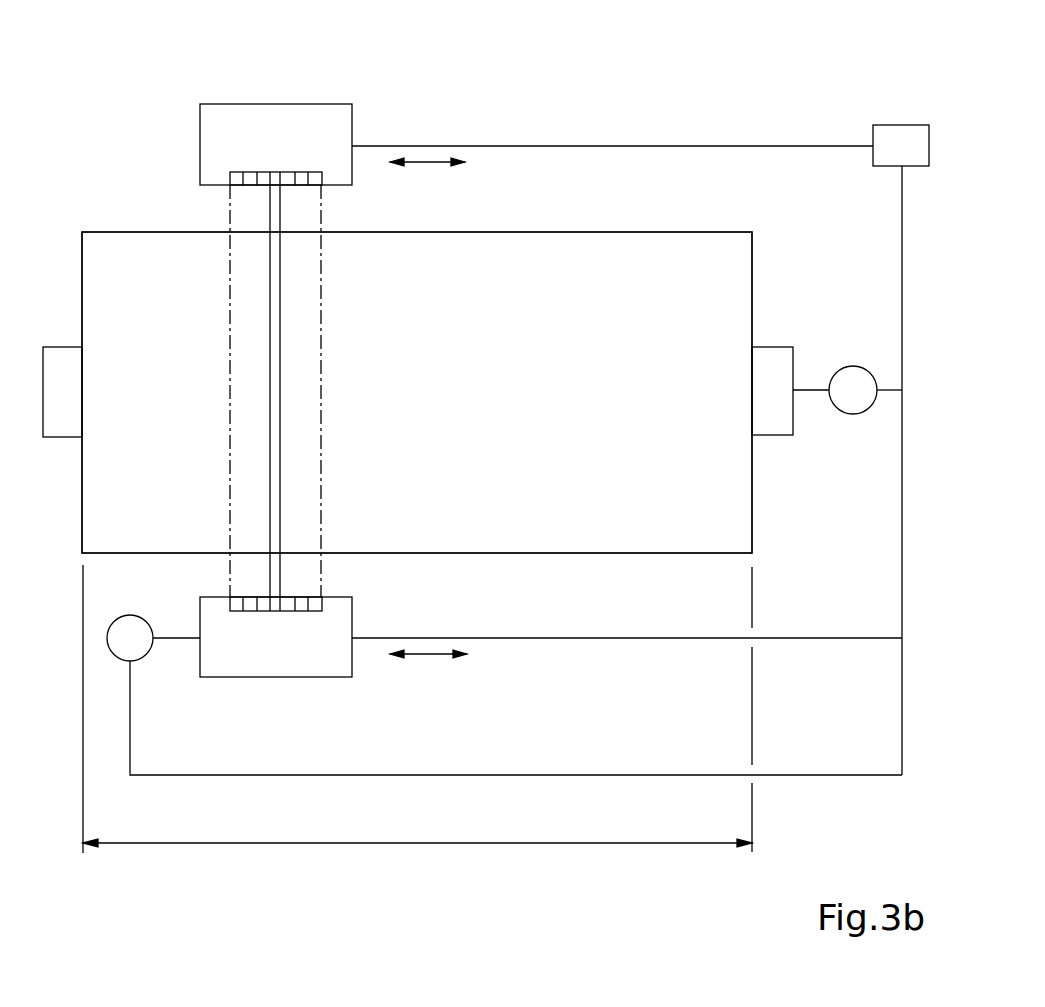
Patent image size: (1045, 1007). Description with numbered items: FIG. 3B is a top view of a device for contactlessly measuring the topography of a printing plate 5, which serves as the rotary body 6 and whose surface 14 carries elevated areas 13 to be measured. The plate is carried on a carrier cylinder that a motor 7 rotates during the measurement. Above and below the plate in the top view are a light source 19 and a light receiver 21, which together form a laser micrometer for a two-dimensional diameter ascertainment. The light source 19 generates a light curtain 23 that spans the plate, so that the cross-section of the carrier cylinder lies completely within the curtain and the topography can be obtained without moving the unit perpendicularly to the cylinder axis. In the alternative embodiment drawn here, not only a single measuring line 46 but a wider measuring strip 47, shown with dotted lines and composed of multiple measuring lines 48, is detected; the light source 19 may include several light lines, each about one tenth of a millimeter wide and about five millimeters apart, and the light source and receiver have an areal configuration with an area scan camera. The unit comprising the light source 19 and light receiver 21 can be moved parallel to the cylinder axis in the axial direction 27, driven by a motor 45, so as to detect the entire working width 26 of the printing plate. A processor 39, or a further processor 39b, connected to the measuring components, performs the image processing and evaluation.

The printing plate 5 is at (418, 361).
The rotary body 6 is at (536, 252).
The elevated areas 13 is at (445, 369).
The surface 14 is at (700, 232).
The light receiver 21 is at (287, 104).
The light source 19 is at (213, 678).
The measuring line 46 is at (277, 172).
The light curtain 23 is at (270, 258).
The measuring strip 47 is at (230, 343).
The measuring lines 48 is at (302, 157).
The axial direction 27 is at (428, 162).
The processor 39 is at (640, 422).
The further processor 39b is at (898, 142).
The motor 7 is at (850, 413).
The motor 45 is at (130, 614).
The working width 26 is at (598, 841).